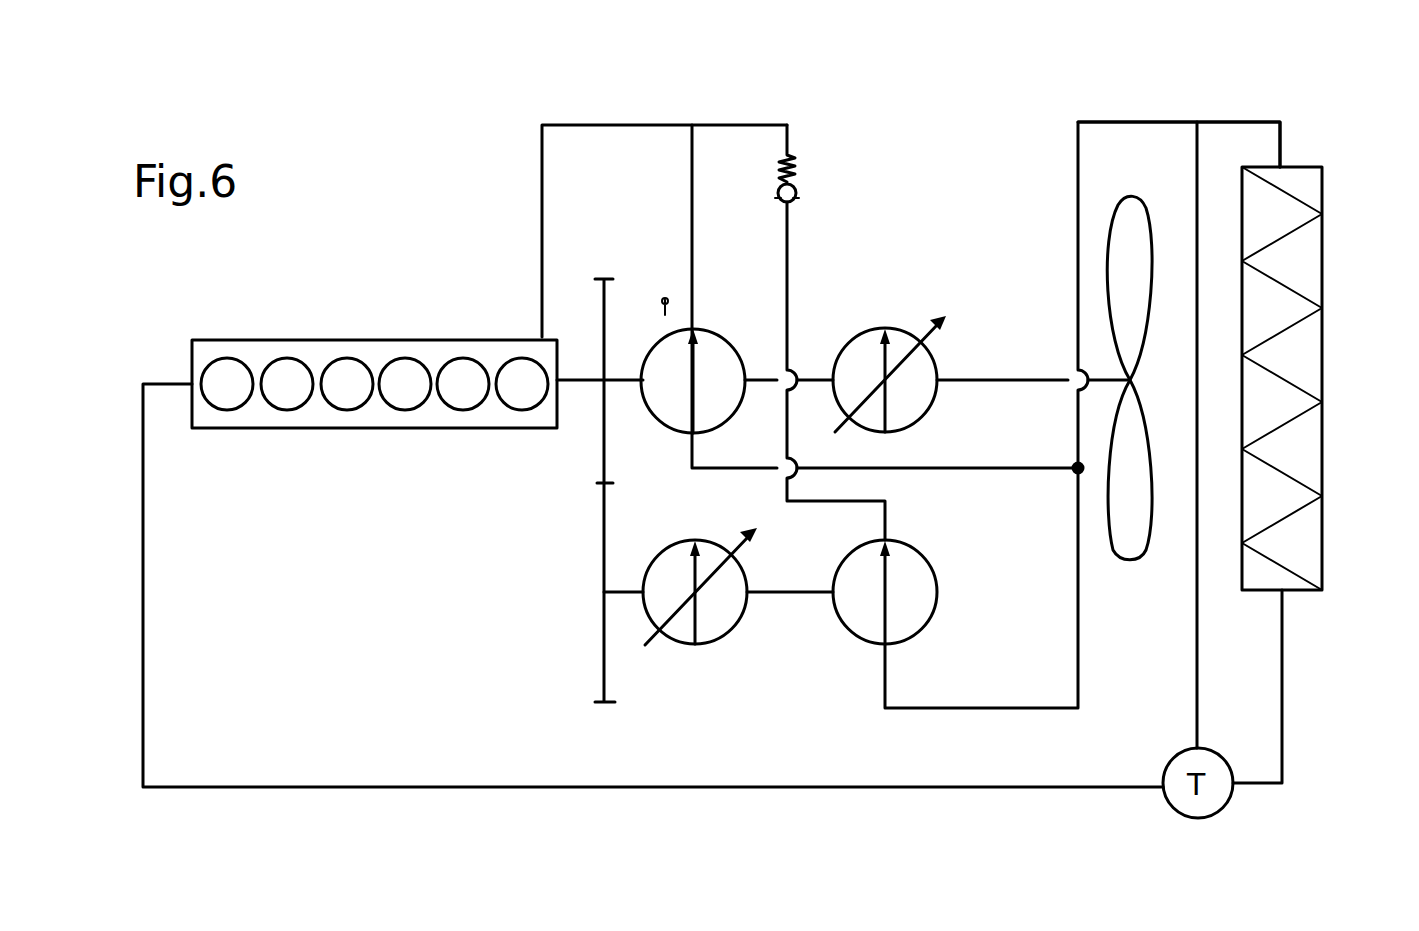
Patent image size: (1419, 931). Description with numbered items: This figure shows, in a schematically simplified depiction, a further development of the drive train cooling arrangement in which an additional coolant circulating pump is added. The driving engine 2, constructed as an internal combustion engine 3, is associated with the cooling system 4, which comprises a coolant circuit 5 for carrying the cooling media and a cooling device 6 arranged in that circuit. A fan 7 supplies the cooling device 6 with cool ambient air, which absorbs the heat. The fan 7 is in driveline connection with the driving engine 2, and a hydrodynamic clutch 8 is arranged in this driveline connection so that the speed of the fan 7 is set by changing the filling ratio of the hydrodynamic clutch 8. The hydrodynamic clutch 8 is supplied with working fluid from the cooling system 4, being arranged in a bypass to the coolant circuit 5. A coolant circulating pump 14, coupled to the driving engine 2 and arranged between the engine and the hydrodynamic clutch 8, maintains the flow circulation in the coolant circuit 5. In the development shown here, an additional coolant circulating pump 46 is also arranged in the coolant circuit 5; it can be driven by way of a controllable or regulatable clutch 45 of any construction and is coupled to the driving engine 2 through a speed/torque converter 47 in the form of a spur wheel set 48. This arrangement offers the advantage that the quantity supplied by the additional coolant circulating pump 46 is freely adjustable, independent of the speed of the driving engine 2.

The driving engine 2 is at (374, 323).
The internal combustion engine 3 is at (373, 347).
The cooling system 4 is at (928, 180).
The coolant circuit 5 is at (1280, 139).
The cooling device 6 is at (1303, 263).
The fan 7 is at (1132, 220).
The hydrodynamic clutch 8 is at (894, 312).
The coolant circulating pump 14 is at (710, 328).
The controllable or regulatable clutch 45 is at (728, 620).
The additional coolant circulating pump 46 is at (925, 600).
The speed/torque converter 47 is at (533, 490).
The spur wheel set 48 is at (596, 637).